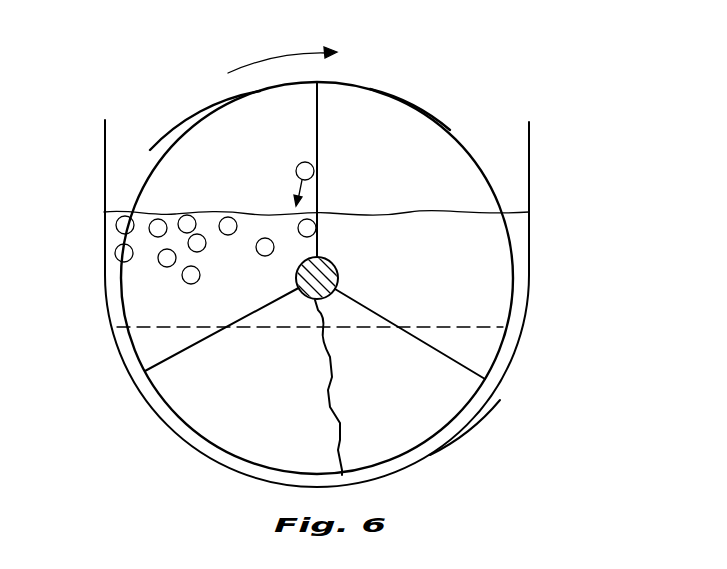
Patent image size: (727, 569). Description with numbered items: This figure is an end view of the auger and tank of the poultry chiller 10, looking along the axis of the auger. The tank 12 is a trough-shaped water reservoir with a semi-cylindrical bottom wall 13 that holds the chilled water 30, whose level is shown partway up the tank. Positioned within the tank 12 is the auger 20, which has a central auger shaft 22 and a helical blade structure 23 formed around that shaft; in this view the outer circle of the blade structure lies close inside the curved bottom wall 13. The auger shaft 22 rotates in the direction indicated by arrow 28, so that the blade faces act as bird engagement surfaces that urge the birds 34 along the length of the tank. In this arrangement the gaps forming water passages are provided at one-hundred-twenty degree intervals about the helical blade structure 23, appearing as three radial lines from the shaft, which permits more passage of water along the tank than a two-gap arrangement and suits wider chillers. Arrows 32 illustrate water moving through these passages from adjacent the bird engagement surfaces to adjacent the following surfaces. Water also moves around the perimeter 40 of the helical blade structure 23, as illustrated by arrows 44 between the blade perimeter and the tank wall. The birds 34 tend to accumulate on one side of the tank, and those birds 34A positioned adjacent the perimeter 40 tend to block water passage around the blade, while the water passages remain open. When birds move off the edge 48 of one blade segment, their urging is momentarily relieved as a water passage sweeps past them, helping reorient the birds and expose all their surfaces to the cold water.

The poultry chiller 10 is at (542, 82).
The tank 12 is at (535, 267).
The semi-cylindrical bottom wall 13 is at (465, 428).
The auger 20 is at (460, 130).
The auger shaft 22 is at (333, 281).
The helical blade structure 23 is at (208, 124).
The arrow indicating direction of rotation 28 is at (265, 60).
The water 30 is at (433, 212).
The arrows indicating water movement 32 is at (198, 332).
The birds 34 is at (190, 222).
The birds adjacent the perimeter 34A is at (118, 250).
The perimeter of the helical blade structure 40 is at (408, 100).
The arrows indicating water flow around perimeter 44 is at (228, 423).
The edge of auger blade segment 48 is at (273, 308).